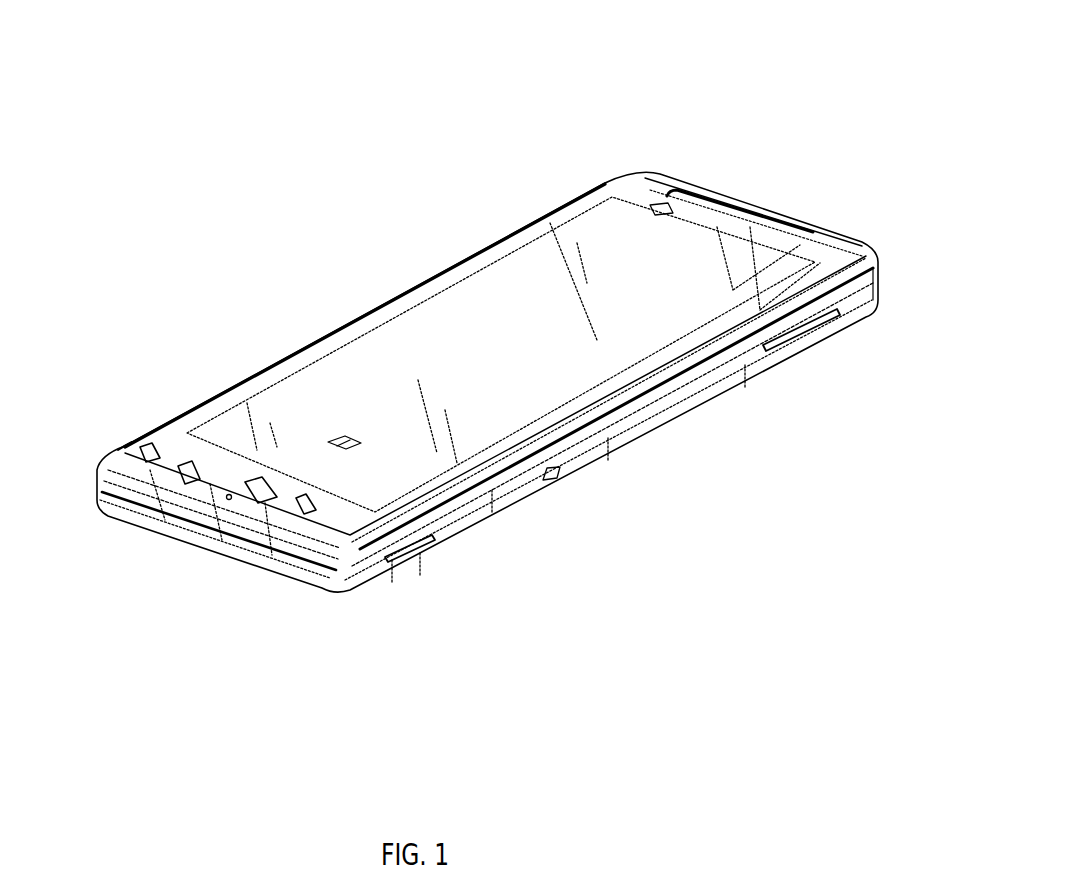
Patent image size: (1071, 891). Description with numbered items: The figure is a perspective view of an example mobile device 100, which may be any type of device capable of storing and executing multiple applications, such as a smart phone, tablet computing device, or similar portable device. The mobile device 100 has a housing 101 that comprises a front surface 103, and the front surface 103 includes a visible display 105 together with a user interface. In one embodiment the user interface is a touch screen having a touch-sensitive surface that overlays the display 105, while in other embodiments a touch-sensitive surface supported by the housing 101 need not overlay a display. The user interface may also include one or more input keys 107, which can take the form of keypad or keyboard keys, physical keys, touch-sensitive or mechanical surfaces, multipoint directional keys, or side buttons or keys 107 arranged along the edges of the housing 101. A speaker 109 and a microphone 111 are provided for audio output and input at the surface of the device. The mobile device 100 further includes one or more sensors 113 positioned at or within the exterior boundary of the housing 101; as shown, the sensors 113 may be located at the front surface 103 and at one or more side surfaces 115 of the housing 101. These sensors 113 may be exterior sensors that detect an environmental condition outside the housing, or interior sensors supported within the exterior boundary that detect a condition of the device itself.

The mobile device 100 is at (800, 203).
The housing 101 is at (457, 262).
The front surface 103 is at (355, 497).
The display 105 is at (407, 347).
The input keys 107 is at (53, 573).
The speaker 109 is at (743, 210).
The microphone 111 is at (229, 500).
The sensors 113 is at (337, 437).
The side surfaces 115 is at (650, 413).